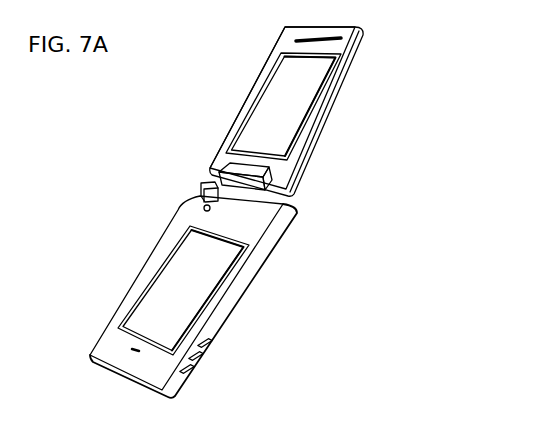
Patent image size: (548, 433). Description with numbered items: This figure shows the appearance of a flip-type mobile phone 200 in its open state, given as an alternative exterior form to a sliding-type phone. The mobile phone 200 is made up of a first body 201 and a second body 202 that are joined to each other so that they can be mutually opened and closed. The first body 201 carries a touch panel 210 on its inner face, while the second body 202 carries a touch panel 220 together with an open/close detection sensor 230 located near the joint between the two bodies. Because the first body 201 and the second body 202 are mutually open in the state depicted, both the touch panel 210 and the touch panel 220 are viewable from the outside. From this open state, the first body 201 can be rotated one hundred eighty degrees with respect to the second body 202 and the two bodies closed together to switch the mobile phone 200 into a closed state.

The mobile phone 200 is at (289, 212).
The first body 201 is at (295, 111).
The second body 202 is at (214, 295).
The touch panel 210 is at (288, 94).
The touch panel 220 is at (193, 287).
The open/close detection sensor 230 is at (203, 208).